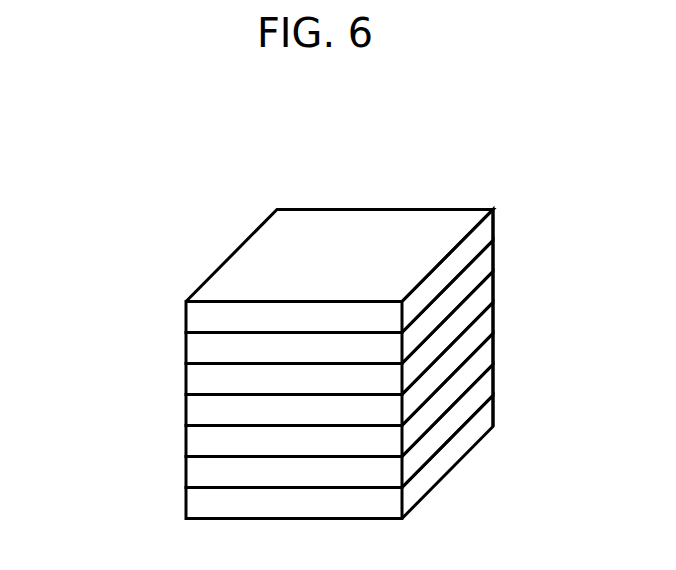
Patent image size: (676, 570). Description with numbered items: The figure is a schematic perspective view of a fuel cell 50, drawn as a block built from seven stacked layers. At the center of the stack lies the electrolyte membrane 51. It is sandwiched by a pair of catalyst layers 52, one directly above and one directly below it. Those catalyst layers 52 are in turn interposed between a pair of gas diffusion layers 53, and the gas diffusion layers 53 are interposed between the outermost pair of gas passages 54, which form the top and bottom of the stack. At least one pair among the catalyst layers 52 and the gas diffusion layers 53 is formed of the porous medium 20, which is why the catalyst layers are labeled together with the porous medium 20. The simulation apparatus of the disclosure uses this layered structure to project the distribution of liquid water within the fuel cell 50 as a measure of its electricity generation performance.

The fuel cell 50 is at (363, 199).
The electrolyte membrane 51 is at (197, 404).
The catalyst layers 52 is at (264, 364).
The porous medium 20 is at (197, 373).
The gas diffusion layers 53 is at (197, 342).
The gas passages 54 is at (197, 311).